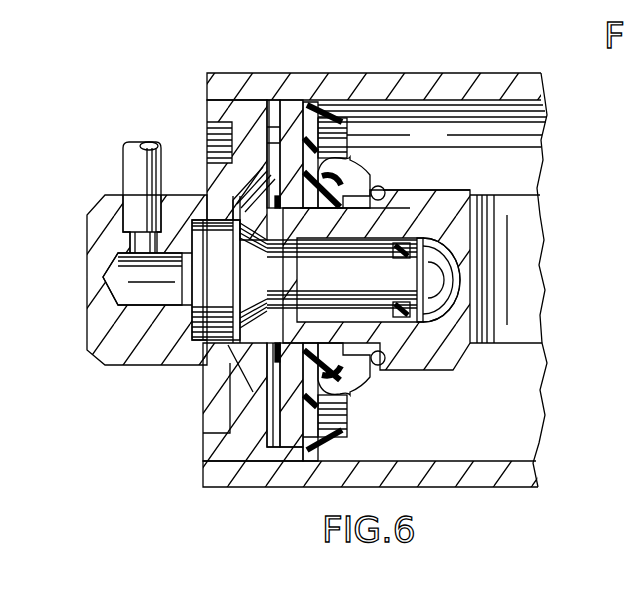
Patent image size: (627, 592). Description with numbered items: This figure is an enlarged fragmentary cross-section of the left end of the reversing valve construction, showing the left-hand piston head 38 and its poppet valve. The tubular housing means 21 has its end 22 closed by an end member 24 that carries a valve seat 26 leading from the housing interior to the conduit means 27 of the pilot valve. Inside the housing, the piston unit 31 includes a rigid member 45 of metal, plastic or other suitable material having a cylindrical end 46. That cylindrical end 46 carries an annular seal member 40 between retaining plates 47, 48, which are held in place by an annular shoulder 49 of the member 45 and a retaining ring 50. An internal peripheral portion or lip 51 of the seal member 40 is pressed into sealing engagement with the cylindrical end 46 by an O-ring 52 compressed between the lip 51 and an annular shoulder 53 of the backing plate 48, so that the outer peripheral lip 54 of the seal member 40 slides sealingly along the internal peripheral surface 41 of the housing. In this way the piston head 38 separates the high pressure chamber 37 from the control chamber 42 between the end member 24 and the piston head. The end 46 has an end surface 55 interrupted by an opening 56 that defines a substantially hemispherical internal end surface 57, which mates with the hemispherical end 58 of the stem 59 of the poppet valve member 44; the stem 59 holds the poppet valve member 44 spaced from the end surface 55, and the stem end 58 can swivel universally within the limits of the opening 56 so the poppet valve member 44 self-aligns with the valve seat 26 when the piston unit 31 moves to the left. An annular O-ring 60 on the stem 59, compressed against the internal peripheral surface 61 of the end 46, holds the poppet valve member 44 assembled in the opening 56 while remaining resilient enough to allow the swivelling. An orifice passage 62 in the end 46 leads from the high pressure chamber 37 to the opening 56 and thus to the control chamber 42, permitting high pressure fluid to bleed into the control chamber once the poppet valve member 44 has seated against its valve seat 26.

The housing means 21 is at (462, 73).
The end of housing means 22 is at (226, 480).
The end member 24 is at (130, 364).
The valve seat 26 is at (232, 322).
The conduit means 27 is at (122, 170).
The piston unit 31 is at (472, 197).
The high pressure chamber 37 is at (527, 398).
The piston head 38 is at (358, 122).
The seal member 40 is at (327, 101).
The internal peripheral surface 41 is at (516, 461).
The control chamber 42 is at (273, 450).
The poppet valve member 44 is at (190, 303).
The rigid member 45 is at (433, 350).
The cylindrical end 46 is at (347, 380).
The retaining plate 47 is at (283, 408).
The retaining plate 48 is at (352, 157).
The annular shoulder 49 is at (458, 167).
The retaining ring 50 is at (233, 200).
The lip 51 is at (355, 224).
The O-ring 52 is at (340, 397).
The annular shoulder 53 is at (343, 427).
The outer peripheral lip 54 is at (348, 102).
The end surface 55 is at (228, 203).
The opening 56 is at (267, 322).
The internal end surface 57 is at (445, 283).
The hemispherical end 58 is at (443, 258).
The stem 59 is at (375, 283).
The O-ring 60 is at (422, 368).
The internal peripheral surface 61 is at (280, 320).
The orifice passage 62 is at (541, 167).